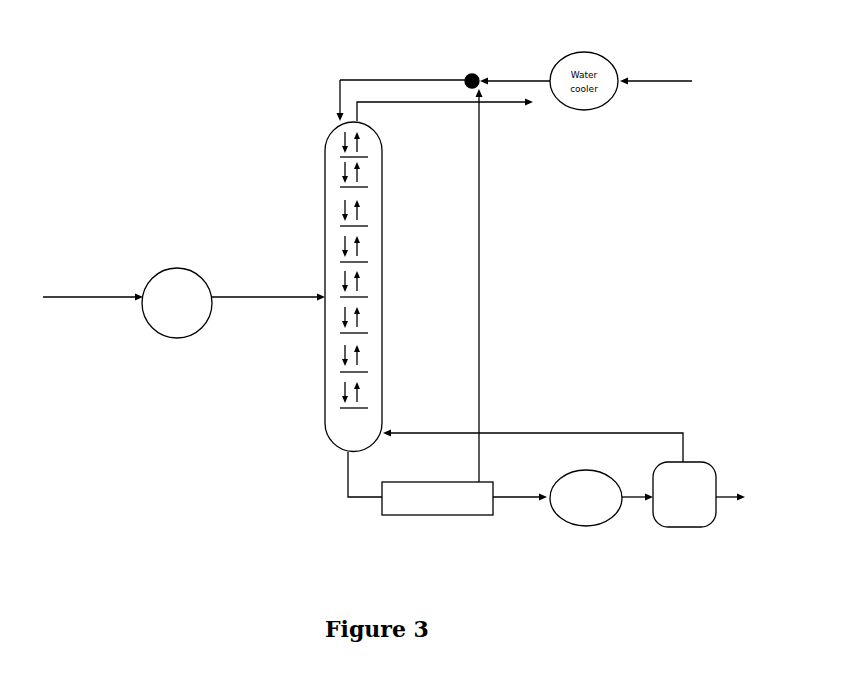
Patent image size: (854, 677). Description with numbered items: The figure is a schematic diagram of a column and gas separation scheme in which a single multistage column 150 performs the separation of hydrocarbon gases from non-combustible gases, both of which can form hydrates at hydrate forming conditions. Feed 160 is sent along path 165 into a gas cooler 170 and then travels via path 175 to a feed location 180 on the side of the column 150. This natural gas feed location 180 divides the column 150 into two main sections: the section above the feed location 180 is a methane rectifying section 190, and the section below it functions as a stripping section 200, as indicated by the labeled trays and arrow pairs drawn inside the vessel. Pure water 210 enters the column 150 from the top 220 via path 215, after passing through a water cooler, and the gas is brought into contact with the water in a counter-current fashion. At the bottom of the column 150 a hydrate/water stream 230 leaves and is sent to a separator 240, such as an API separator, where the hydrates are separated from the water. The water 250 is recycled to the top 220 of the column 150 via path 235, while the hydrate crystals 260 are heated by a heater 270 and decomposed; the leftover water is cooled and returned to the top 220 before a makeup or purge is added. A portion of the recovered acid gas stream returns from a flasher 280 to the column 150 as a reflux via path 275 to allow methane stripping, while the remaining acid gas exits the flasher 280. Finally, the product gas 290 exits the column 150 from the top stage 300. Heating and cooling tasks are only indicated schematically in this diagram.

The column 150 is at (325, 350).
The feed 160 is at (73, 263).
The path 165 is at (93, 300).
The gas cooler 170 is at (178, 278).
The path 175 is at (241, 292).
The feed location 180 is at (322, 290).
The methane rectifying section 190 is at (383, 235).
The stripping section 200 is at (383, 393).
The pure water 210 is at (675, 45).
The path 215 is at (421, 80).
The top 220 is at (337, 120).
The hydrate/water stream 230 is at (347, 473).
The path 235 is at (481, 265).
The separator 240 is at (435, 508).
The water 250 is at (546, 322).
The hydrate crystals 260 is at (527, 560).
The heater 270 is at (588, 515).
The path 275 is at (613, 430).
The flasher 280 is at (675, 513).
The product gas 290 is at (540, 134).
The top stage 300 is at (365, 120).